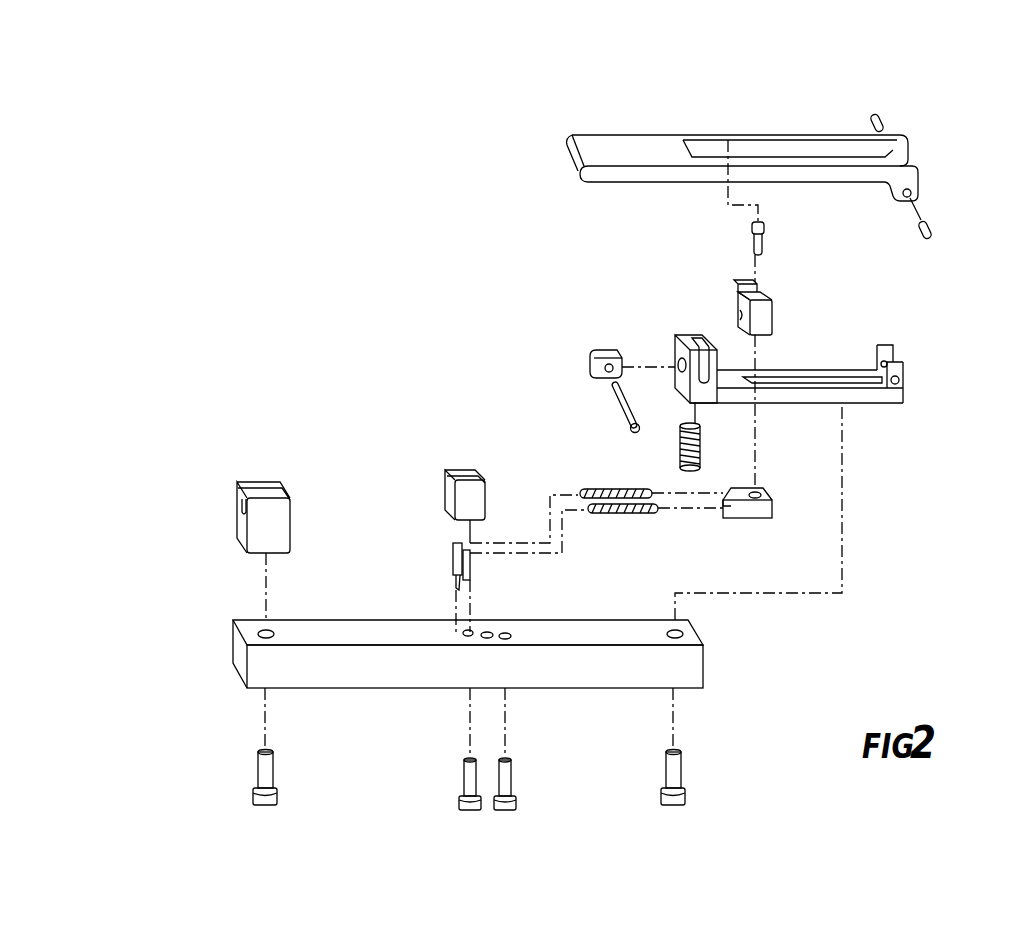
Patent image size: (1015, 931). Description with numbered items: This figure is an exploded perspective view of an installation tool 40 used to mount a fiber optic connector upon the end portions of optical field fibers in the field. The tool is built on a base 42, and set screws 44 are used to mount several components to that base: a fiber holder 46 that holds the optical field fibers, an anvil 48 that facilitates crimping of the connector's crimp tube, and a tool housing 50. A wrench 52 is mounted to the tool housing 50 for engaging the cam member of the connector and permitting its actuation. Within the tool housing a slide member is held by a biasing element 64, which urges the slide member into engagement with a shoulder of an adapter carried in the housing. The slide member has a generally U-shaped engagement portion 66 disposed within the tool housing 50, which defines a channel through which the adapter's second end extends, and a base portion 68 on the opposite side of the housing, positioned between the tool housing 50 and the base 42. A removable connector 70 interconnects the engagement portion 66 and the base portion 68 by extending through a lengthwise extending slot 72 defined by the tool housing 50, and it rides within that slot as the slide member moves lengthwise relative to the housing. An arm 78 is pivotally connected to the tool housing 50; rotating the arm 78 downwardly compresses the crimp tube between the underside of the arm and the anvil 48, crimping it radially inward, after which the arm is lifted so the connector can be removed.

The installation tool 40 is at (440, 267).
The base 42 is at (233, 668).
The set screws 44 is at (275, 800).
The fiber holder 46 is at (238, 494).
The anvil 48 is at (462, 465).
The tool housing 50 is at (836, 461).
The wrench 52 is at (616, 423).
The biasing element 64 is at (620, 517).
The engagement portion 66 is at (745, 288).
The base portion 68 is at (742, 508).
The removable connector 70 is at (770, 243).
The slot 72 is at (800, 373).
The arm 78 is at (722, 132).